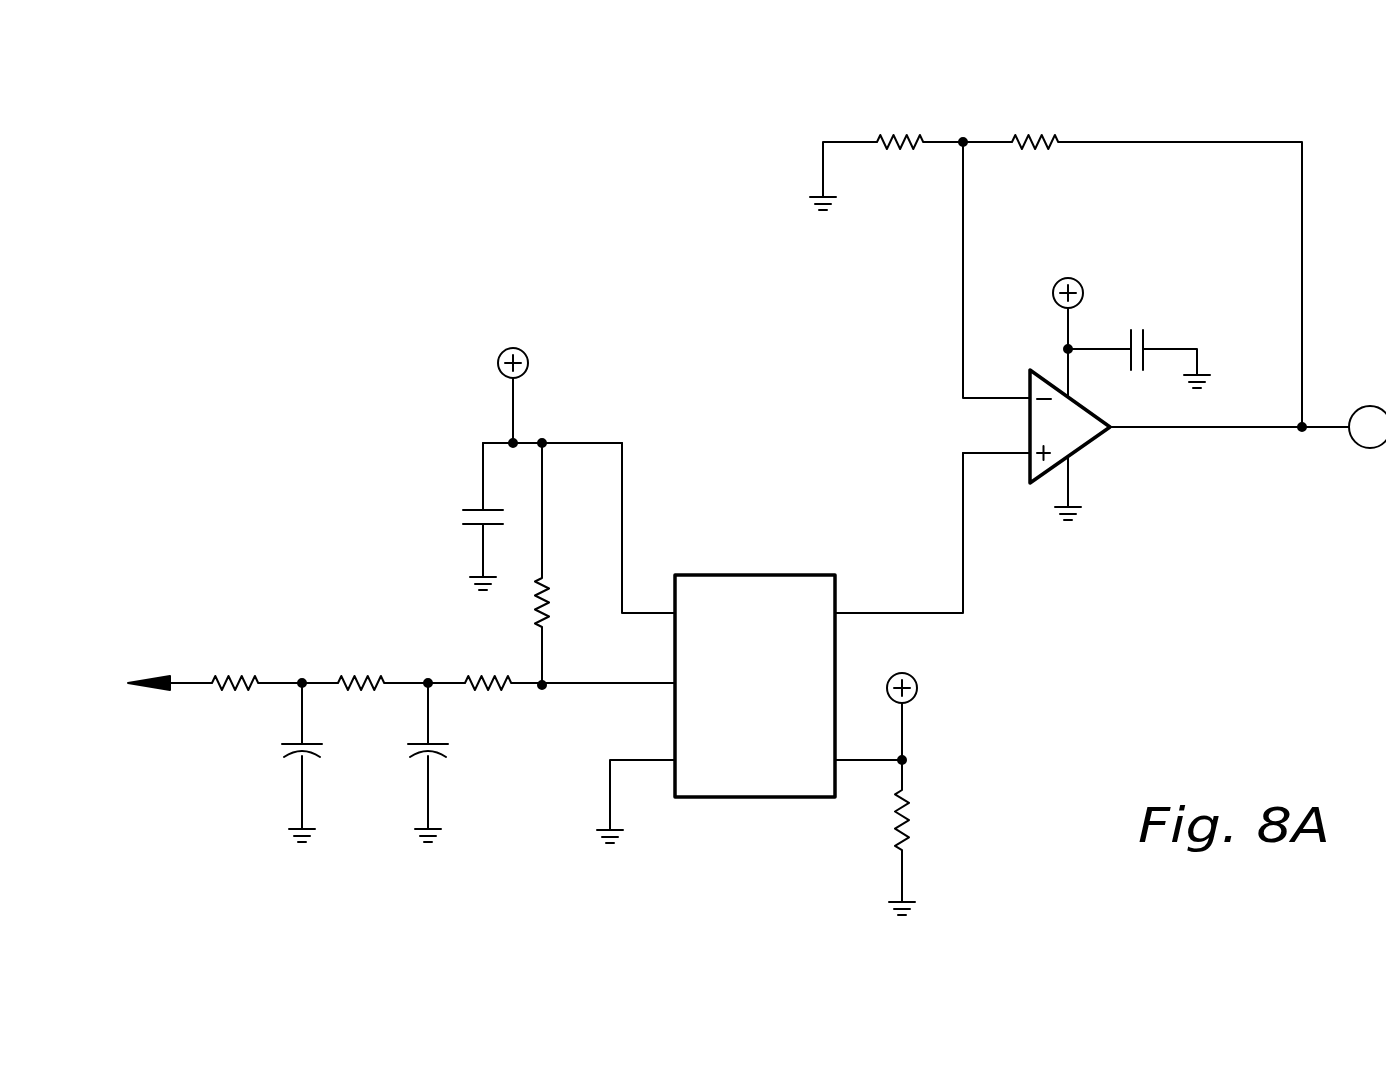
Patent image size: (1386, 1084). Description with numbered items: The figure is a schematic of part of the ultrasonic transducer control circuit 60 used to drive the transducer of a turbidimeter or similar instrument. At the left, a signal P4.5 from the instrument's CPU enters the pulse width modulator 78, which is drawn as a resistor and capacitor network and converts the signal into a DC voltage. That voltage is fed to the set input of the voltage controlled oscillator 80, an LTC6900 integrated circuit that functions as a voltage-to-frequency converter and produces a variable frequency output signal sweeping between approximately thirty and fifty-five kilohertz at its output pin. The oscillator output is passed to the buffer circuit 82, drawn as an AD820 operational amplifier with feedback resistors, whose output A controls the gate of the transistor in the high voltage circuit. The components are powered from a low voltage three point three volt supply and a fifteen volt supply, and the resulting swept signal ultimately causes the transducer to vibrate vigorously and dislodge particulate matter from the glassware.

The ultrasonic transducer control circuit 60 is at (420, 265).
The pulse width modulator 78 is at (281, 588).
The voltage controlled oscillator 80 is at (749, 814).
The buffer circuit 82 is at (1183, 116).